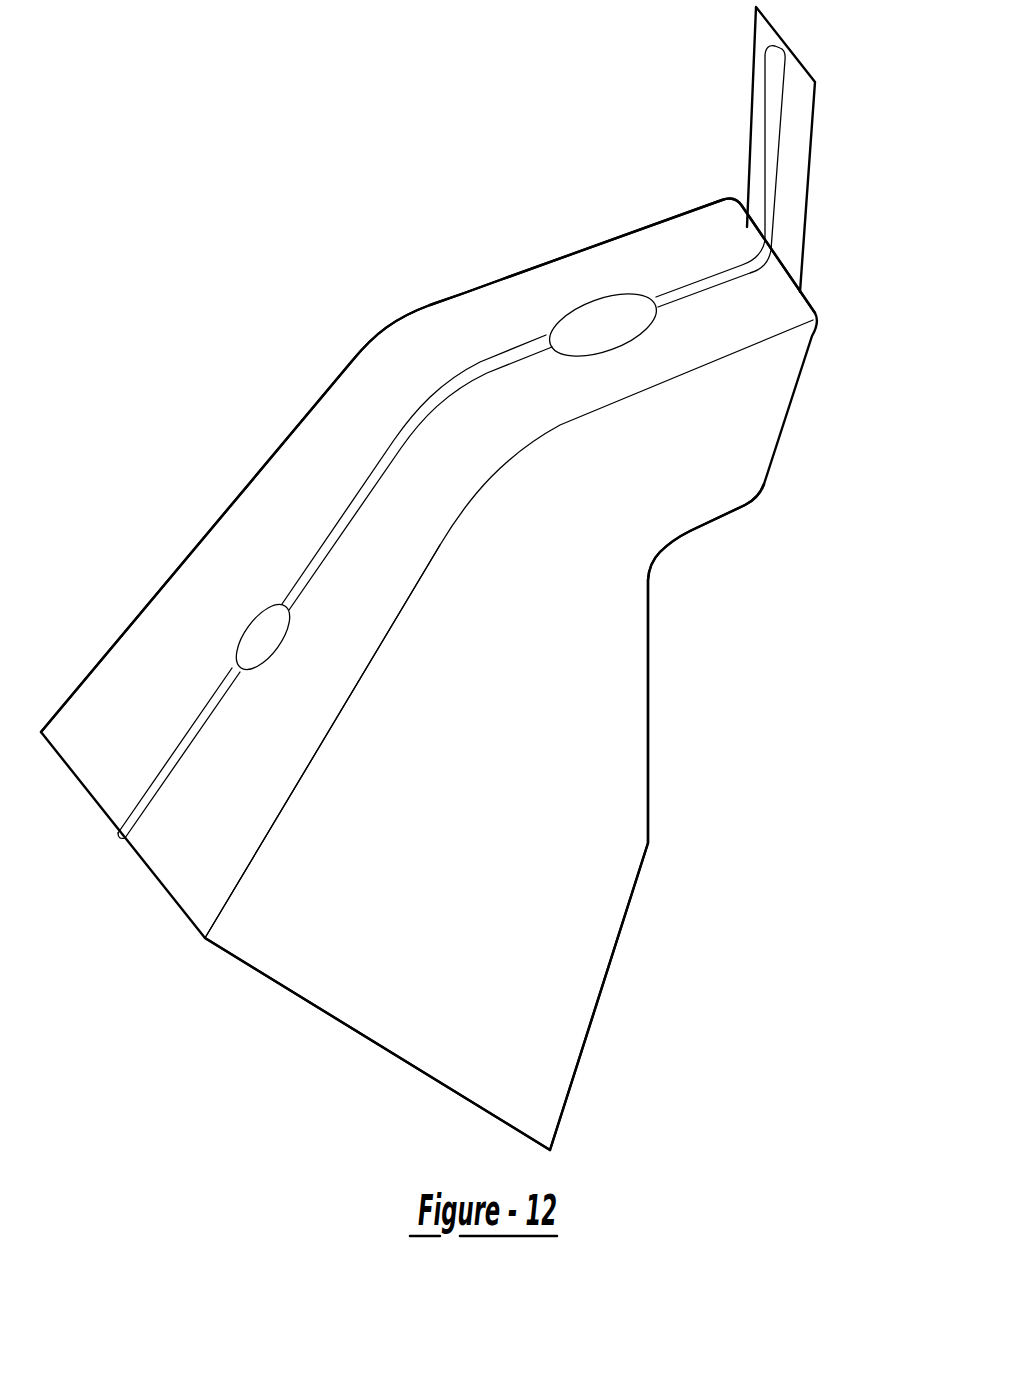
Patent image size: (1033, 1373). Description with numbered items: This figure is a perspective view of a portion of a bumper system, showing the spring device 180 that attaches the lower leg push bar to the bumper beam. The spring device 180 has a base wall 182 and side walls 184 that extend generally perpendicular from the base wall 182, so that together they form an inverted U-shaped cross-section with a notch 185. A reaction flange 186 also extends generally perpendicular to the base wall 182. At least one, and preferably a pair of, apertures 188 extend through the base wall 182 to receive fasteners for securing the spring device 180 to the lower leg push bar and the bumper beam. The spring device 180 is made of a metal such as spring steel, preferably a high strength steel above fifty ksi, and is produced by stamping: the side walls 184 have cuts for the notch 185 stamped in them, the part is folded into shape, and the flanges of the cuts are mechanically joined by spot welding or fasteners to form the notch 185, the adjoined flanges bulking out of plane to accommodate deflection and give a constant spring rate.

The spring device 180 is at (400, 321).
The base wall 182 is at (478, 310).
The side walls 184 is at (597, 705).
The notch 185 is at (665, 555).
The reaction flange 186 is at (792, 173).
The apertures 188 is at (247, 630).